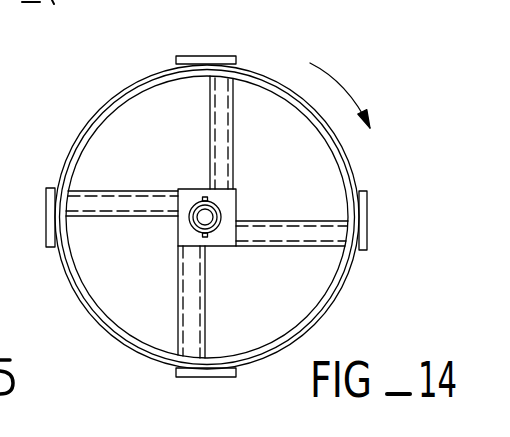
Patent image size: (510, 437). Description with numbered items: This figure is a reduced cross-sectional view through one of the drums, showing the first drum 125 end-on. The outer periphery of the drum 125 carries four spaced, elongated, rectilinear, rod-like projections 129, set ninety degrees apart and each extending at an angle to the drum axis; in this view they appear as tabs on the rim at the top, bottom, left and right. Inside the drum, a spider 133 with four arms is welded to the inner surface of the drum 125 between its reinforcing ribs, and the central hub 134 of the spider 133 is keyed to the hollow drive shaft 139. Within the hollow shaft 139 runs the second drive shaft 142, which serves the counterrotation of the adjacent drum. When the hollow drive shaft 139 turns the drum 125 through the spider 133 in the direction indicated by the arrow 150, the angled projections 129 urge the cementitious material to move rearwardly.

The first drum 125 is at (98, 100).
The rod-like projections 129 is at (222, 57).
The spider 133 is at (210, 147).
The hub 134 is at (185, 239).
The hollow drive shaft 139 is at (217, 211).
The second drive shaft 142 is at (209, 223).
The arrow 150 is at (337, 82).